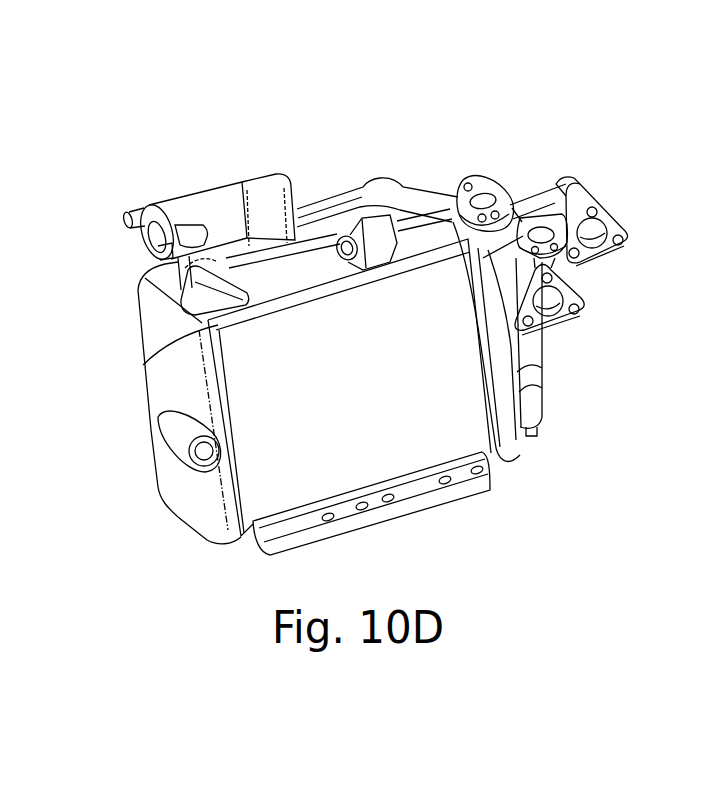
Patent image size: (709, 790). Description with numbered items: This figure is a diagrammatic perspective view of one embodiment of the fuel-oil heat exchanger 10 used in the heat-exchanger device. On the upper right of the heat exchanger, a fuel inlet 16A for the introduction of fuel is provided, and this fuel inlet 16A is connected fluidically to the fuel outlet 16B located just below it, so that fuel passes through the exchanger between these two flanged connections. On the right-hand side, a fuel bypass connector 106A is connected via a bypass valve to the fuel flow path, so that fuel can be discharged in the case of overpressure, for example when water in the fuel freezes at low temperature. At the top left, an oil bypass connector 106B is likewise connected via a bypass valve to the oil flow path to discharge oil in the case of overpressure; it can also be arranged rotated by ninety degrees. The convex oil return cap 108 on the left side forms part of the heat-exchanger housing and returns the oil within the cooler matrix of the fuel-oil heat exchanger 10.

The fuel-oil heat exchanger 10 is at (110, 160).
The oil bypass connector 106B is at (143, 200).
The fuel inlet 16A is at (613, 204).
The fuel outlet 16B is at (583, 307).
The fuel bypass connector 106A is at (548, 405).
The oil return cap 108 is at (193, 490).